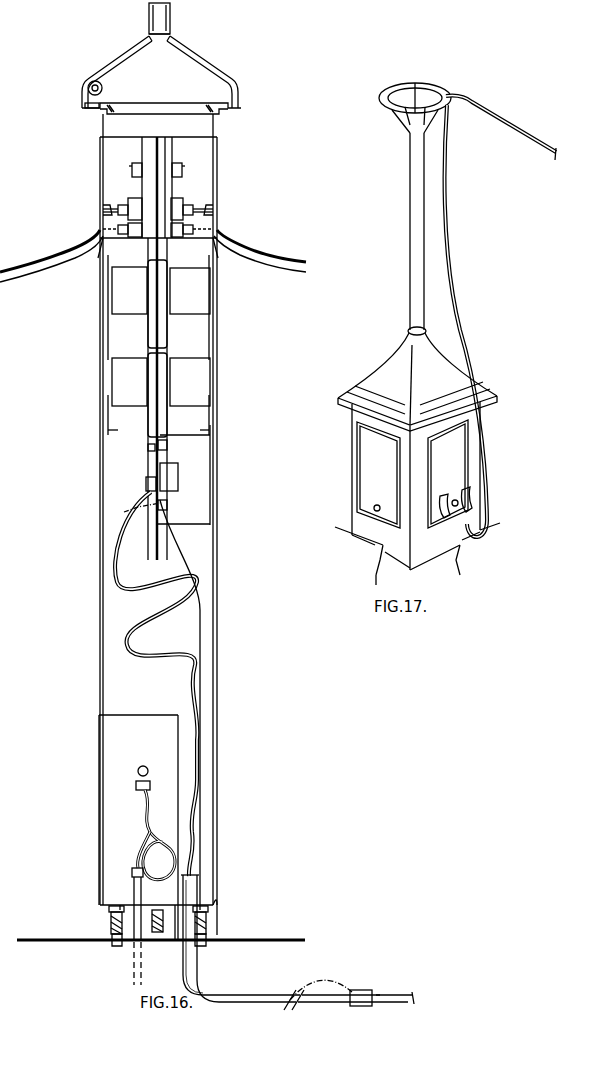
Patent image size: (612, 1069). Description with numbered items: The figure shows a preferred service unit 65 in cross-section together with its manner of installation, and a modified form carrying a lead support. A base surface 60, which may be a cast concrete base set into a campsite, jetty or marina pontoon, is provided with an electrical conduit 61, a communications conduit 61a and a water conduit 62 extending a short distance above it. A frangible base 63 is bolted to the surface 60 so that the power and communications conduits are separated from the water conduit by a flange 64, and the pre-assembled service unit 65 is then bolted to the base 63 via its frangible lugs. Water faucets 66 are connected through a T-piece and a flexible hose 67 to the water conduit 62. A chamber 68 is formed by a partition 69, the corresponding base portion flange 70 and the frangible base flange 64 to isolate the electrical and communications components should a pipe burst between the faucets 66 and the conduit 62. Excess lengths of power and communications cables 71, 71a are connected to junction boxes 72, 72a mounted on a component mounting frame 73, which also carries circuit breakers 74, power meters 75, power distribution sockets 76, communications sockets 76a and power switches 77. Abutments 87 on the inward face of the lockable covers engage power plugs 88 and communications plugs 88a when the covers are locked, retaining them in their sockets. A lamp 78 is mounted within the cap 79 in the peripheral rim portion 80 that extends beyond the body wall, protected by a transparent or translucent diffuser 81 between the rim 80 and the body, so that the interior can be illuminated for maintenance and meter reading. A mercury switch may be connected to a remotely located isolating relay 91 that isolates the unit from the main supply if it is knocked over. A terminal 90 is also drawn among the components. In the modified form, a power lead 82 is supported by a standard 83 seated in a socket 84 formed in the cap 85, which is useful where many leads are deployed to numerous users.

In FIG. 16, the base surface 60 is at (265, 938).
In FIG. 16, the electrical conduit 61 is at (203, 957).
In FIG. 16, the communications conduit 61a is at (208, 975).
In FIG. 16, the water conduit 62 is at (132, 961).
In FIG. 16, the frangible base 63 is at (210, 933).
In FIG. 16, the flange 64 is at (172, 943).
In FIG. 16, the service unit 65 is at (100, 549).
In FIG. 16, the water faucets 66 is at (138, 772).
In FIG. 16, the flexible hose 67 is at (148, 812).
In FIG. 16, the chamber 68 is at (132, 746).
In FIG. 16, the partition 69 is at (130, 713).
In FIG. 16, the base portion flange 70 is at (175, 908).
In FIG. 16, the power and communications cables 71 is at (198, 591).
In FIG. 16, the communications cable 71a is at (172, 556).
In FIG. 16, the junction box 72 is at (146, 483).
In FIG. 16, the junction box 72a is at (157, 447).
In FIG. 16, the component mounting frame 73 is at (148, 448).
In FIG. 16, the circuit breakers 74 is at (180, 482).
In FIG. 16, the power meters 75 is at (120, 292).
In FIG. 16, the power distribution sockets 76 is at (118, 209).
In FIG. 16, the communications sockets 76a is at (118, 228).
In FIG. 16, the power switches 77 is at (132, 170).
In FIG. 16, the lamp 78 is at (88, 89).
In FIG. 16, the cap 79 is at (135, 46).
In FIG. 16, the peripheral rim portion 80 is at (82, 107).
In FIG. 16, the diffuser 81 is at (96, 109).
In FIG. 17, the power lead 82 is at (462, 248).
In FIG. 17, the standard 83 is at (408, 268).
In FIG. 17, the socket 84 is at (408, 333).
In FIG. 17, the cap 85 is at (364, 386).
In FIG. 16, the abutments 87 is at (110, 208).
In FIG. 16, the power plugs 88 is at (126, 205).
In FIG. 16, the communications plugs 88a is at (108, 242).
In FIG. 16, the terminal 90 is at (168, 506).
In FIG. 16, the isolating relay 91 is at (365, 990).